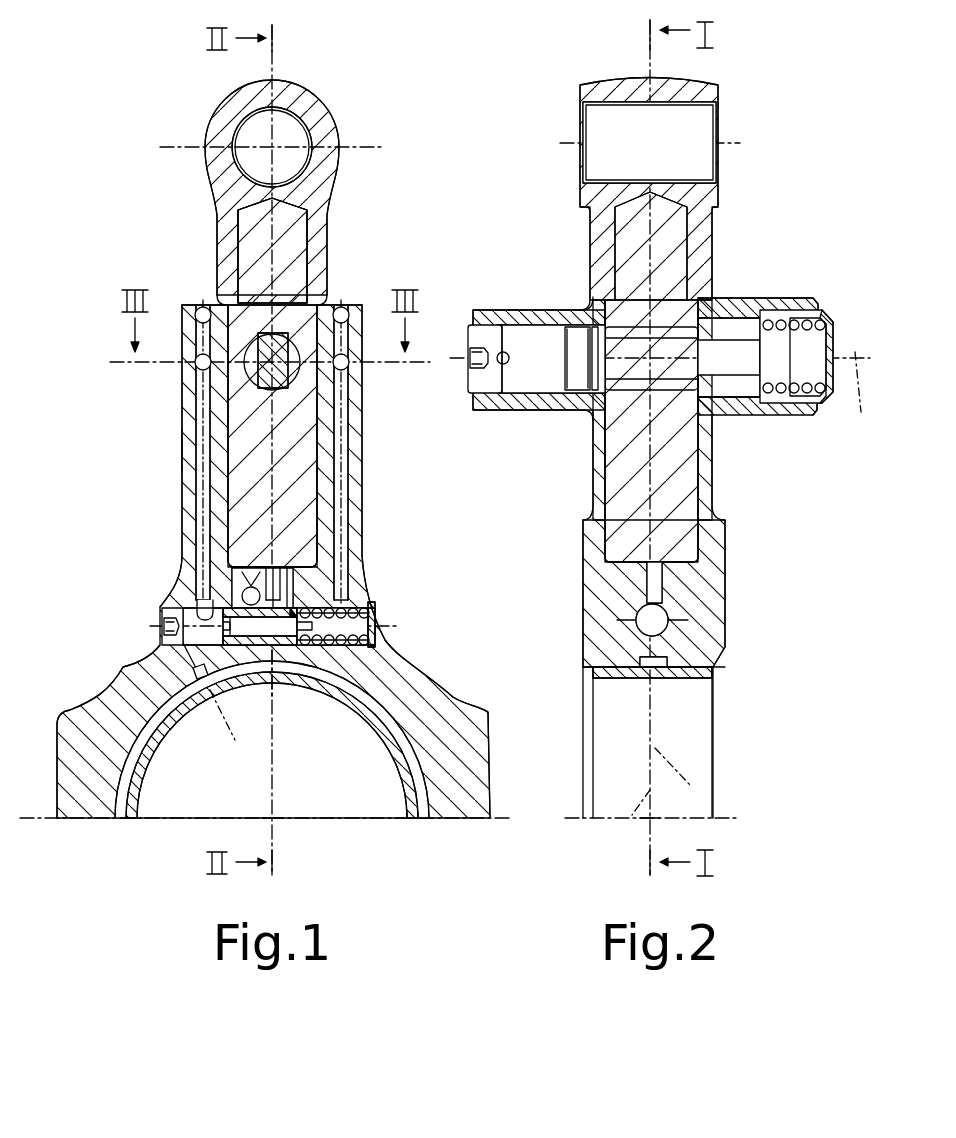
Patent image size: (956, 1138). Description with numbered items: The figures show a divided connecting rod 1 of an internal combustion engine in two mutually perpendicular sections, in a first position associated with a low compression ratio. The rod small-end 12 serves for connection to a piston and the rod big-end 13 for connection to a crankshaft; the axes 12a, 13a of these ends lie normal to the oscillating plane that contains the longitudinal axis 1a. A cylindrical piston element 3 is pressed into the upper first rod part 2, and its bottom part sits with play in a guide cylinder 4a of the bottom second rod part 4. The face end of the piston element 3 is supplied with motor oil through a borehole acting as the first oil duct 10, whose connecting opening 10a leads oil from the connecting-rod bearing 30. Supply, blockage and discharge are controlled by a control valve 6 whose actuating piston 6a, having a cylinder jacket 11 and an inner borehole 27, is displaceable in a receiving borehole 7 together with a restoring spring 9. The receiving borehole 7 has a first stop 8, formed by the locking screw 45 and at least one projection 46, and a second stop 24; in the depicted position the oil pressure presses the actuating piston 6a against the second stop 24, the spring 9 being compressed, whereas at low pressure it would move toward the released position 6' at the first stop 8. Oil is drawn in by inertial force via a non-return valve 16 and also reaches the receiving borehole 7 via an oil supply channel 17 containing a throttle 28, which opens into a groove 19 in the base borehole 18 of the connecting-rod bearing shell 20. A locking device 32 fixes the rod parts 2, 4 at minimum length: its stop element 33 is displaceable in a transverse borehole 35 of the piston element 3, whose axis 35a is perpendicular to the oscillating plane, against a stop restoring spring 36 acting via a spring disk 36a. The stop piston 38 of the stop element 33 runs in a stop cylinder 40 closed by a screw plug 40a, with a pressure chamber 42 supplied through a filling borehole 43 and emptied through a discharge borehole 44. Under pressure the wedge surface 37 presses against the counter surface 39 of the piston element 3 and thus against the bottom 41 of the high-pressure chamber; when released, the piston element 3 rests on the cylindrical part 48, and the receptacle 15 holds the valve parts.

In FIG. 1, the connecting rod 1 is at (307, 192).
In FIG. 2, the connecting rod 1 is at (689, 189).
In FIG. 1, the longitudinal axis 1a is at (292, 100).
In FIG. 2, the longitudinal axis 1a is at (648, 820).
In FIG. 1, the first rod part 2 is at (312, 203).
In FIG. 2, the first rod part 2 is at (706, 200).
In FIG. 1, the piston element 3 is at (273, 382).
In FIG. 2, the piston element 3 is at (652, 386).
In FIG. 1, the second rod part 4 is at (273, 559).
In FIG. 2, the second rod part 4 is at (654, 559).
In FIG. 1, the guide cylinder 4a is at (302, 456).
In FIG. 2, the guide cylinder 4a is at (727, 506).
In FIG. 1, the control valve 6 is at (291, 680).
In FIG. 1, the clamping piece released position 6' is at (387, 613).
In FIG. 1, the actuating piston 6a is at (306, 642).
In FIG. 1, the receiving borehole 7 is at (387, 613).
In FIG. 1, the first stop 8 is at (180, 606).
In FIG. 1, the restoring spring 9 is at (350, 608).
In FIG. 1, the first oil duct 10 is at (290, 568).
In FIG. 2, the first oil duct 10 is at (664, 587).
In FIG. 1, the connecting opening 10a is at (302, 584).
In FIG. 2, the connecting opening 10a is at (641, 660).
In FIG. 1, the cylinder jacket 11 is at (251, 596).
In FIG. 2, the cylinder jacket 11 is at (670, 628).
In FIG. 1, the rod small-end 12 is at (279, 155).
In FIG. 2, the rod small-end 12 is at (669, 109).
In FIG. 1, the axis of the rod small-end 12a is at (232, 148).
In FIG. 2, the axis of the rod small-end 12a is at (718, 126).
In FIG. 1, the rod big-end 13 is at (292, 765).
In FIG. 2, the rod big-end 13 is at (684, 773).
In FIG. 1, the axis of the rod big-end 13a is at (276, 822).
In FIG. 2, the axis of the rod big-end 13a is at (592, 828).
In FIG. 1, the receptacle 15 is at (309, 533).
In FIG. 1, the non-return valve 16 is at (212, 598).
In FIG. 1, the oil supply channel 17 is at (185, 650).
In FIG. 1, the base borehole 18 is at (133, 783).
In FIG. 2, the base borehole 18 is at (629, 678).
In FIG. 1, the groove 19 is at (410, 806).
In FIG. 2, the groove 19 is at (708, 672).
In FIG. 1, the connecting-rod bearing shell 20 is at (422, 806).
In FIG. 2, the connecting-rod bearing shell 20 is at (714, 673).
In FIG. 1, the second stop 24 is at (383, 647).
In FIG. 1, the inner borehole 27 is at (284, 650).
In FIG. 1, the throttle 28 is at (196, 680).
In FIG. 1, the connecting-rod bearing 30 is at (385, 745).
In FIG. 2, the connecting-rod bearing 30 is at (617, 750).
In FIG. 1, the locking device 32 is at (292, 333).
In FIG. 2, the locking device 32 is at (591, 298).
In FIG. 1, the stop element 33 is at (290, 378).
In FIG. 2, the stop element 33 is at (684, 336).
In FIG. 1, the transverse borehole 35 is at (240, 374).
In FIG. 2, the transverse borehole 35 is at (738, 368).
In FIG. 2, the axis of the transverse borehole 35a is at (523, 356).
In FIG. 2, the stop restoring spring 36 is at (805, 368).
In FIG. 2, the spring disk 36a is at (790, 330).
In FIG. 2, the wedge surface 37 is at (604, 430).
In FIG. 2, the stop piston 38 is at (582, 352).
In FIG. 2, the counter surface 39 is at (678, 348).
In FIG. 2, the stop cylinder 40 is at (480, 339).
In FIG. 2, the screw plug 40a is at (483, 384).
In FIG. 2, the bottom of the high-pressure chamber 41 is at (620, 572).
In FIG. 2, the pressure chamber 42 is at (521, 360).
In FIG. 1, the filling borehole 43 is at (200, 428).
In FIG. 1, the discharge borehole 44 is at (346, 456).
In FIG. 1, the locking screw 45 is at (165, 611).
In FIG. 1, the projection 46 is at (226, 668).
In FIG. 2, the cylindrical part 48 is at (723, 365).